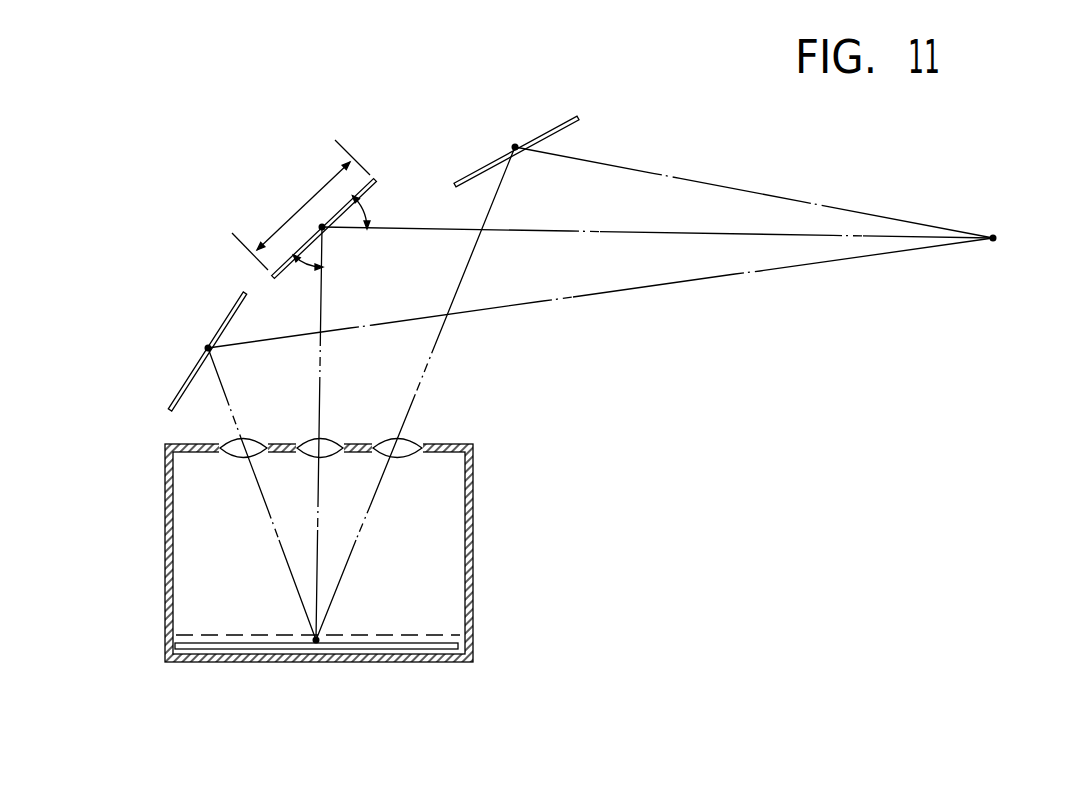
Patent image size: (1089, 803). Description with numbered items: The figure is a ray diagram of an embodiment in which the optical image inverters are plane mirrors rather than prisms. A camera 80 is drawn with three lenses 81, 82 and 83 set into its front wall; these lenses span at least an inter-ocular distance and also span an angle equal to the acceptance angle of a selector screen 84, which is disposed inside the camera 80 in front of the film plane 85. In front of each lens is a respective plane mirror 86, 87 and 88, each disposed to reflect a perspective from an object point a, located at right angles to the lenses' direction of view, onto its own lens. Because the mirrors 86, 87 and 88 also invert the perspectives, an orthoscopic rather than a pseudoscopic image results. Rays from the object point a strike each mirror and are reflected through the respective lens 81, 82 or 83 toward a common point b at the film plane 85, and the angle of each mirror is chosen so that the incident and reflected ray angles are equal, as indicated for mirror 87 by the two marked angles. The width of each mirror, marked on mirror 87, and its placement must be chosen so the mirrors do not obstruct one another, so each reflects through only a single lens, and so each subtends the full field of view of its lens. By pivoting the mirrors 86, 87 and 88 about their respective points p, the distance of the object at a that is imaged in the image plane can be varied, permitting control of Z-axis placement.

The camera 80 is at (473, 582).
The lens 81 is at (244, 458).
The lens 82 is at (322, 453).
The lens 83 is at (404, 456).
The selector screen 84 is at (389, 636).
The film plane 85 is at (420, 649).
The plane mirror 86 is at (240, 303).
The plane mirror 87 is at (375, 181).
The plane mirror 88 is at (571, 117).
The object point a is at (995, 242).
The image point b is at (316, 644).
The pivot point p is at (204, 349).